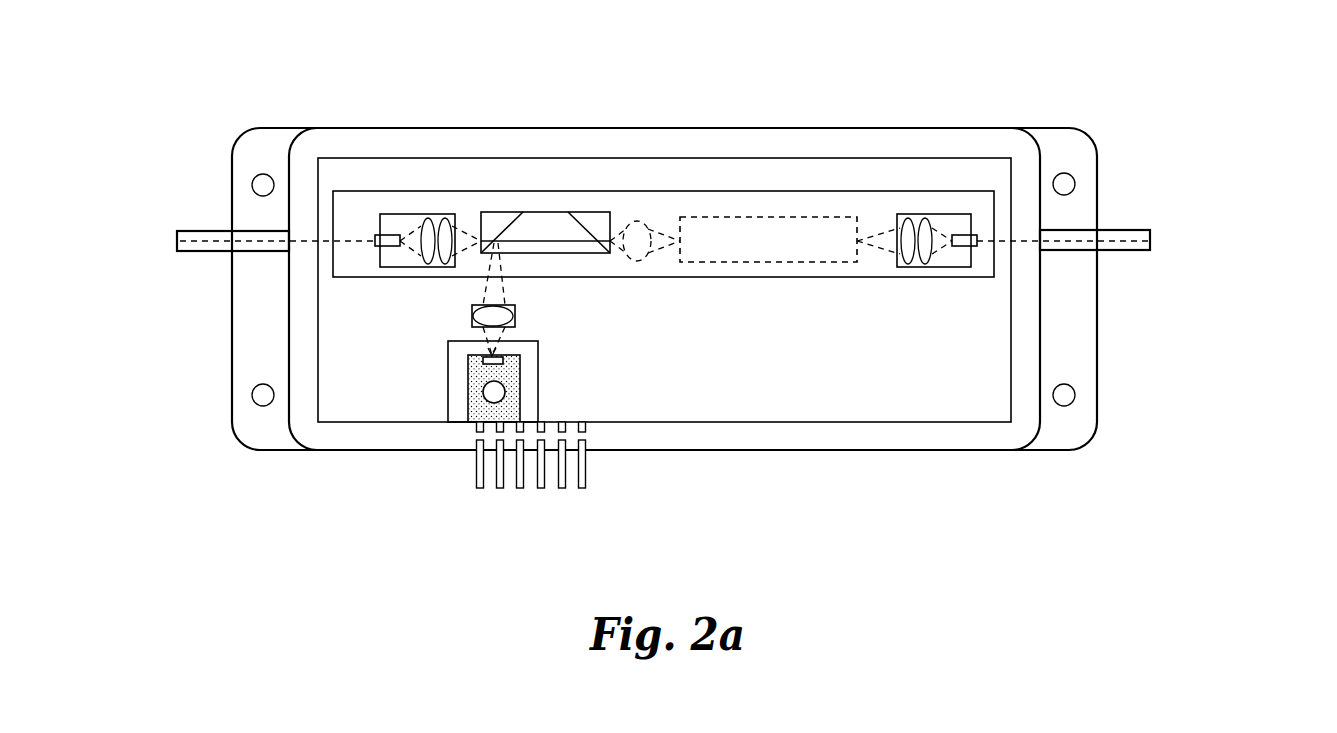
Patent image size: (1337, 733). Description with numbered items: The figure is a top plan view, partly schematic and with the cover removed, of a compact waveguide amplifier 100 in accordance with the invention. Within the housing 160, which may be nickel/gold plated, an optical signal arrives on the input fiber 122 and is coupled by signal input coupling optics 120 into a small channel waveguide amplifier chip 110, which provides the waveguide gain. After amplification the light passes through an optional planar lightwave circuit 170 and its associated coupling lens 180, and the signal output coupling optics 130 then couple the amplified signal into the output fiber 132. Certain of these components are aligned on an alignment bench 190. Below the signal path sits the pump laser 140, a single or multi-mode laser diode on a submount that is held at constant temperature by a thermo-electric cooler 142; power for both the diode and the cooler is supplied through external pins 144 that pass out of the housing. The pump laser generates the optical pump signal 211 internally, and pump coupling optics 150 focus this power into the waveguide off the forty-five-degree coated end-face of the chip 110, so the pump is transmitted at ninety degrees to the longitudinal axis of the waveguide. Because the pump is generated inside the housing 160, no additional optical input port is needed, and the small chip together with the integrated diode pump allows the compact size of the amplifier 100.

The compact waveguide amplifier 100 is at (833, 96).
The channel waveguide amplifier chip 110 is at (547, 213).
The signal input coupling optics 120 is at (400, 267).
The input fiber 122 is at (175, 241).
The signal output coupling optics 130 is at (952, 267).
The output fiber 132 is at (1152, 240).
The pump laser 140 is at (503, 360).
The thermo-electric cooler 142 is at (455, 373).
The external pins 144 is at (500, 468).
The pump coupling optics 150 is at (493, 317).
The housing 160 is at (837, 440).
The planar lightwave circuit 170 is at (763, 263).
The coupling lens 180 is at (637, 259).
The alignment bench 190 is at (467, 200).
The optical pump signal 211 is at (493, 288).